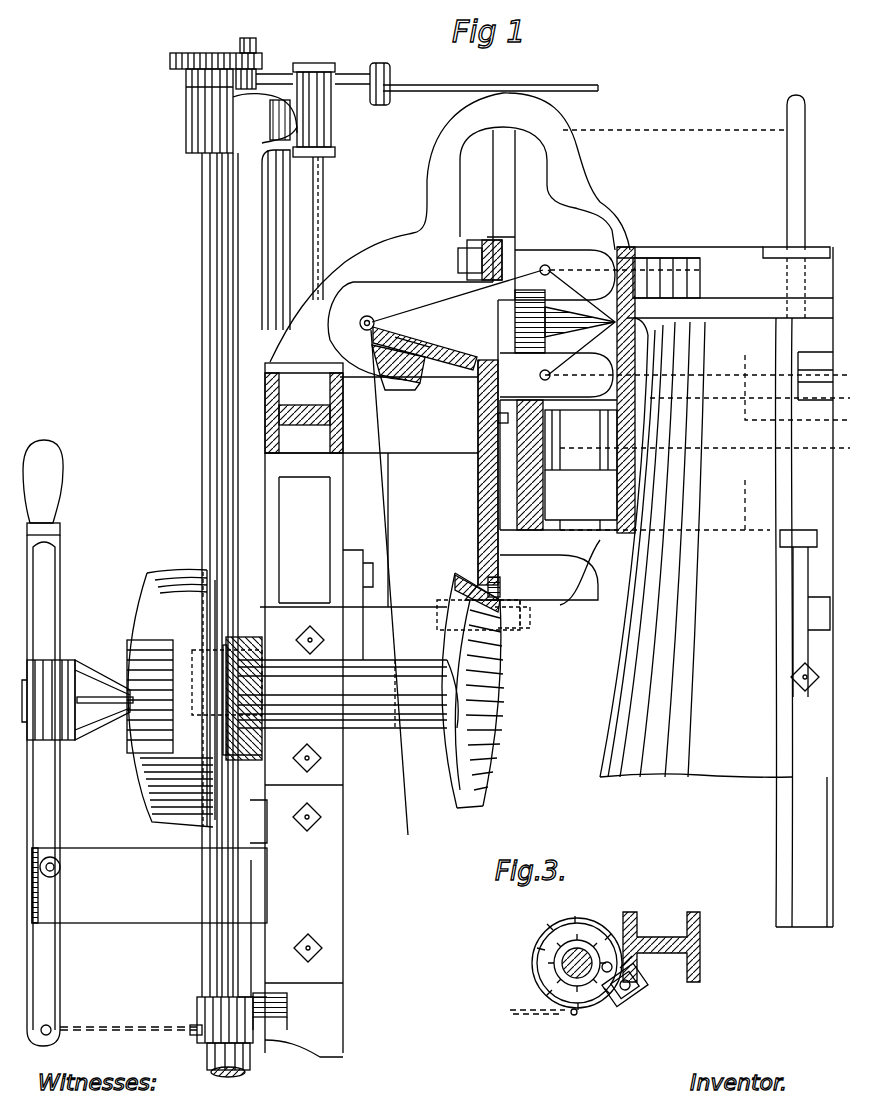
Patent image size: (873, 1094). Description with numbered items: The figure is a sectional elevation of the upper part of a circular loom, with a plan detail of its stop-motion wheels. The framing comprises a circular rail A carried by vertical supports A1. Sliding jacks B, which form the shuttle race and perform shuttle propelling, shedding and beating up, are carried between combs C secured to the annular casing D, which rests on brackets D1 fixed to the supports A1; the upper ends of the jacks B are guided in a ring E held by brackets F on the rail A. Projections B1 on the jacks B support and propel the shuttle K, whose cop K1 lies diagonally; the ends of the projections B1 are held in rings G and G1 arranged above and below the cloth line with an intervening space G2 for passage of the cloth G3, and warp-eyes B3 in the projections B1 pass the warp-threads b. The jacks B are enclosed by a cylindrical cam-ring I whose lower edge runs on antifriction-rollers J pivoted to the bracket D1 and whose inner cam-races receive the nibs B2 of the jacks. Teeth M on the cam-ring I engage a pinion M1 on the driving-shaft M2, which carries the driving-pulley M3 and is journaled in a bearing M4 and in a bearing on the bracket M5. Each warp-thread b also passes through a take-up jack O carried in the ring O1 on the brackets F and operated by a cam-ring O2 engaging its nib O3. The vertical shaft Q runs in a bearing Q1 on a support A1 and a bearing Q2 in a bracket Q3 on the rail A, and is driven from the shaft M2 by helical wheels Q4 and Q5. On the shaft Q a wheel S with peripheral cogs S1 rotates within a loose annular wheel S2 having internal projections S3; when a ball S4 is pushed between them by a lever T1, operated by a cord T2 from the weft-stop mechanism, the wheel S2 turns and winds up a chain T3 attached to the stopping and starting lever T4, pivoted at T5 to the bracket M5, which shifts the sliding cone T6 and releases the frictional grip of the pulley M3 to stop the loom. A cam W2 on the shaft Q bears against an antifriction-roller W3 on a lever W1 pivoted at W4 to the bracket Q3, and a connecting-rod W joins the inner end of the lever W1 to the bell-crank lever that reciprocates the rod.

In FIG. 1, the connecting-rod W is at (578, 86).
In FIG. 1, the lever W1 is at (355, 75).
In FIG. 1, the cam W2 is at (192, 54).
In FIG. 1, the antifriction-roller W3 is at (262, 56).
In FIG. 1, the pivot W4 is at (322, 66).
In FIG. 1, the vertical shaft Q is at (202, 428).
In FIG. 3, the vertical shaft Q is at (583, 970).
In FIG. 1, the bearing Q1 is at (240, 758).
In FIG. 1, the bearing Q2 is at (188, 113).
In FIG. 1, the bracket Q3 is at (314, 178).
In FIG. 1, the helical toothed wheel Q4 is at (262, 650).
In FIG. 1, the helical toothed wheel Q5 is at (227, 682).
In FIG. 1, the bracket F is at (786, 111).
In FIG. 1, the ring E is at (488, 242).
In FIG. 1, the sliding jack B is at (516, 212).
In FIG. 1, the projection B1 is at (600, 323).
In FIG. 1, the nib B2 is at (480, 398).
In FIG. 1, the warp-eye B3 is at (540, 271).
In FIG. 1, the ring G is at (690, 272).
In FIG. 1, the ring G1 is at (637, 348).
In FIG. 1, the intervening space G2 is at (708, 322).
In FIG. 1, the cloth G3 is at (696, 622).
In FIG. 1, the shuttle K is at (515, 314).
In FIG. 1, the cop K1 is at (580, 322).
In FIG. 1, the take-up jack O is at (371, 321).
In FIG. 1, the circular ring O1 is at (430, 372).
In FIG. 1, the cam-ring O2 is at (445, 355).
In FIG. 1, the nib O3 is at (418, 345).
In FIG. 1, the warp-thread b is at (457, 552).
In FIG. 1, the circular rail A is at (296, 379).
In FIG. 1, the vertical support A1 is at (549, 652).
In FIG. 3, the vertical support A1 is at (661, 933).
In FIG. 1, the cam-ring I is at (496, 422).
In FIG. 1, the comb C is at (508, 488).
In FIG. 1, the annular casing D is at (567, 465).
In FIG. 1, the bracket D1 is at (636, 613).
In FIG. 1, the teeth M is at (458, 583).
In FIG. 1, the pinion M1 is at (500, 690).
In FIG. 1, the driving-shaft M2 is at (128, 735).
In FIG. 1, the driving-pulley M3 is at (171, 698).
In FIG. 1, the bearing M4 is at (348, 694).
In FIG. 1, the bracket M5 is at (149, 885).
In FIG. 1, the antifriction-roller J is at (500, 590).
In FIG. 1, the lever T1 is at (270, 995).
In FIG. 3, the lever T1 is at (625, 1000).
In FIG. 1, the cord T2 is at (253, 870).
In FIG. 1, the chain T3 is at (130, 1031).
In FIG. 3, the chain T3 is at (532, 1016).
In FIG. 1, the stopping and starting lever T4 is at (43, 743).
In FIG. 1, the pivot T5 is at (61, 868).
In FIG. 1, the sliding cone T6 is at (98, 648).
In FIG. 3, the wheel S is at (553, 963).
In FIG. 3, the cog S1 is at (552, 976).
In FIG. 3, the annular wheel S2 is at (592, 923).
In FIG. 3, the internal projection S3 is at (555, 930).
In FIG. 3, the ball S4 is at (640, 975).